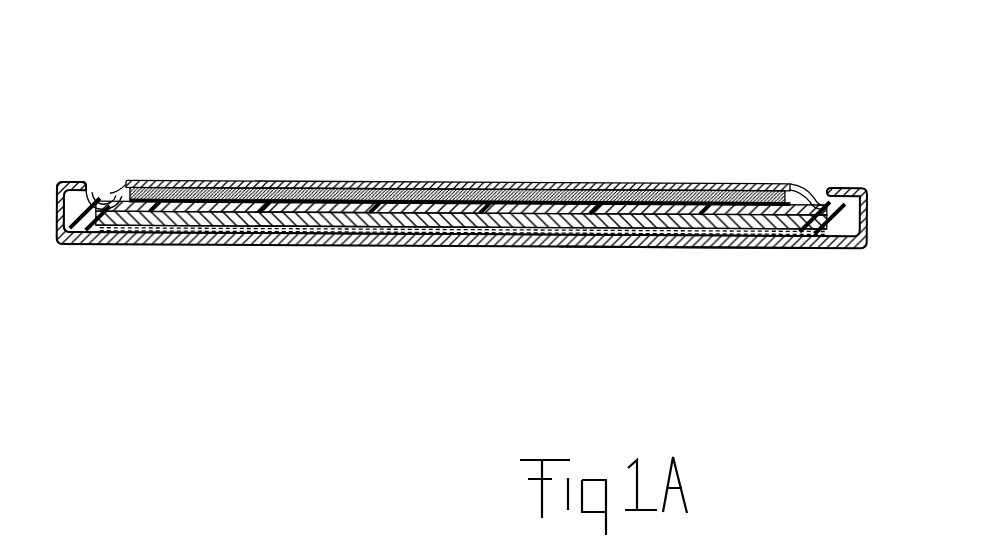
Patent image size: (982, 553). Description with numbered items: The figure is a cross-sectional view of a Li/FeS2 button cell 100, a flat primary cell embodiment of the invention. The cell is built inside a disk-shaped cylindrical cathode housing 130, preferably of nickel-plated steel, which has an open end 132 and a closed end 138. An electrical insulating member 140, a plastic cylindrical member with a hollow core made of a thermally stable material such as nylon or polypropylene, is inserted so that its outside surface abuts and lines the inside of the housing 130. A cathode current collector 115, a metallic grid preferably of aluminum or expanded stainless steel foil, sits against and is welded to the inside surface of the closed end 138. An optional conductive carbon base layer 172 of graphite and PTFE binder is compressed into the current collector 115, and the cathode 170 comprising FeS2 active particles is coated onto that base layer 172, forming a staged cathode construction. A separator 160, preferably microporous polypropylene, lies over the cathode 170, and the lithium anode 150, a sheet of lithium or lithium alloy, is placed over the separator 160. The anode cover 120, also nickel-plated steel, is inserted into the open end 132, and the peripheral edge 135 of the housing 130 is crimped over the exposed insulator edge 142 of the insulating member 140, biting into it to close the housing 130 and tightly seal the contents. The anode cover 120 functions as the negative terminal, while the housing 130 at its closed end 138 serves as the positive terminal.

The button cell 100 is at (586, 120).
The cathode current collector 115 is at (672, 242).
The anode cover 120 is at (214, 180).
The cathode housing 130 is at (867, 246).
The open end 132 is at (800, 188).
The peripheral edge 135 is at (68, 183).
The closed end 138 is at (365, 248).
The insulating member 140 is at (72, 236).
The insulator edge 142 is at (108, 194).
The anode 150 is at (405, 190).
The separator 160 is at (305, 190).
The cathode 170 is at (568, 238).
The conductive carbon base layer 172 is at (233, 232).